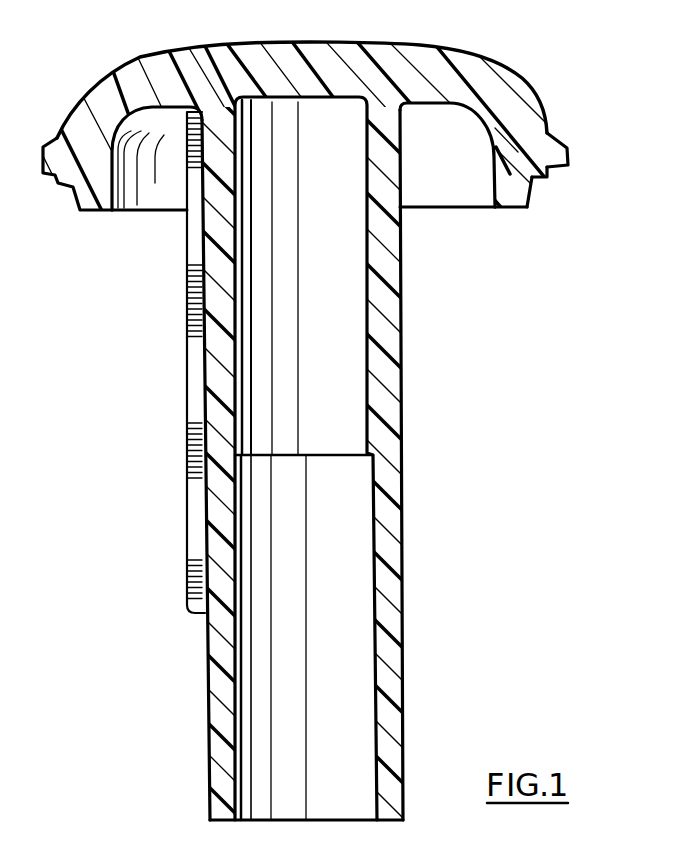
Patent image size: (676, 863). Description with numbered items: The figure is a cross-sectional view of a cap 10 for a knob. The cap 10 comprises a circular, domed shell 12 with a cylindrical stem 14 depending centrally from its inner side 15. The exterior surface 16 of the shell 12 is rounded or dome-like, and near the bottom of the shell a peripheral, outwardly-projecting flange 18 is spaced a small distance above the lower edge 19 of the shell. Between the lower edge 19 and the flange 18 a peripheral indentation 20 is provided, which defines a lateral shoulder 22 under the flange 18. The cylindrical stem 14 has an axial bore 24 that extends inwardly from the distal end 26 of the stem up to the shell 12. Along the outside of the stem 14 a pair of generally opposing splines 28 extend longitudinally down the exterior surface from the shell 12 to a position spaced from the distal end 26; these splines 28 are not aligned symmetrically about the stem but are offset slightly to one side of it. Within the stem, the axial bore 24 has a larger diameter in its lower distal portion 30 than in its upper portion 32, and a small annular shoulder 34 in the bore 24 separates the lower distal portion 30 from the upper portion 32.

The cap 10 is at (178, 280).
The shell 12 is at (523, 88).
The cylindrical stem 14 is at (393, 481).
The inner side 15 is at (470, 120).
The exterior surface 16 is at (438, 43).
The flange 18 is at (562, 148).
The lower edge 19 is at (506, 210).
The peripheral indentation 20 is at (532, 198).
The lateral shoulder 22 is at (560, 180).
The axial bore 24 is at (360, 573).
The distal end 26 is at (393, 822).
The splines 28 is at (196, 381).
The lower distal portion 30 is at (257, 667).
The upper portion 32 is at (352, 296).
The annular shoulder 34 is at (343, 452).